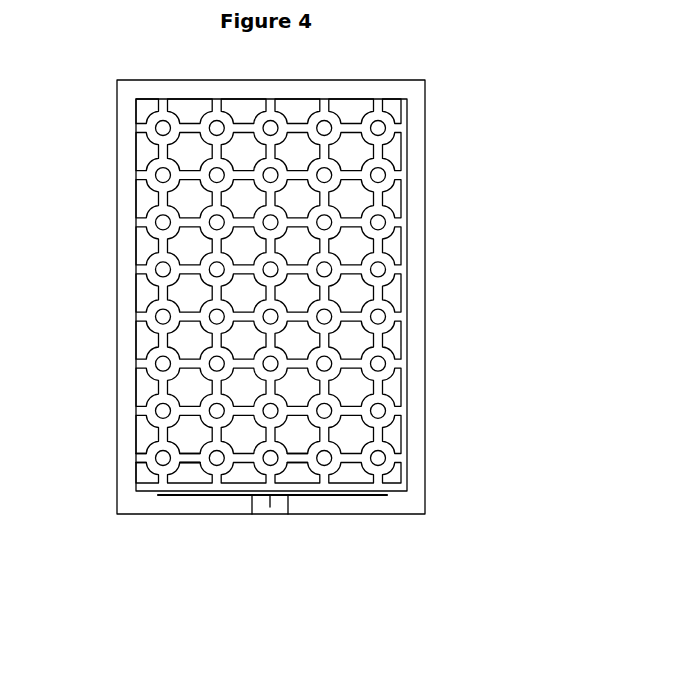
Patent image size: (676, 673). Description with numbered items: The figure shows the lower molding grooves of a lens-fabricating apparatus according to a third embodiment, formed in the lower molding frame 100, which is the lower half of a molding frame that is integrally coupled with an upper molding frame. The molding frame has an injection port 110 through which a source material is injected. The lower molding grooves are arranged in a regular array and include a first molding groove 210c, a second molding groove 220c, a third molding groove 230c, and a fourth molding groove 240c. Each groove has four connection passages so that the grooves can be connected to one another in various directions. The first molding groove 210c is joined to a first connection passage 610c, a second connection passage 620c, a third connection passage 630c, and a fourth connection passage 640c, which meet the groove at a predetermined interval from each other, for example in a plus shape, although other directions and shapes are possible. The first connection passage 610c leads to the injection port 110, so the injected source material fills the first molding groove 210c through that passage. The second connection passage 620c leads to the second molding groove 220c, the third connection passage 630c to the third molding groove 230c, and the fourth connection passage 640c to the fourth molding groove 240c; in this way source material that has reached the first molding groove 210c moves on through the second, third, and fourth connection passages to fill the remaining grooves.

The lower molding frame 100 is at (417, 287).
The injection port 110 is at (270, 508).
The first molding groove 210c is at (198, 463).
The second molding groove 220c is at (136, 448).
The third molding groove 230c is at (205, 394).
The fourth molding groove 240c is at (292, 468).
The first connection passage 610c is at (207, 478).
The second connection passage 620c is at (188, 454).
The third connection passage 630c is at (207, 432).
The fourth connection passage 640c is at (242, 458).